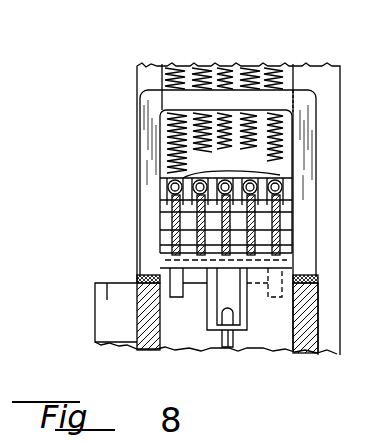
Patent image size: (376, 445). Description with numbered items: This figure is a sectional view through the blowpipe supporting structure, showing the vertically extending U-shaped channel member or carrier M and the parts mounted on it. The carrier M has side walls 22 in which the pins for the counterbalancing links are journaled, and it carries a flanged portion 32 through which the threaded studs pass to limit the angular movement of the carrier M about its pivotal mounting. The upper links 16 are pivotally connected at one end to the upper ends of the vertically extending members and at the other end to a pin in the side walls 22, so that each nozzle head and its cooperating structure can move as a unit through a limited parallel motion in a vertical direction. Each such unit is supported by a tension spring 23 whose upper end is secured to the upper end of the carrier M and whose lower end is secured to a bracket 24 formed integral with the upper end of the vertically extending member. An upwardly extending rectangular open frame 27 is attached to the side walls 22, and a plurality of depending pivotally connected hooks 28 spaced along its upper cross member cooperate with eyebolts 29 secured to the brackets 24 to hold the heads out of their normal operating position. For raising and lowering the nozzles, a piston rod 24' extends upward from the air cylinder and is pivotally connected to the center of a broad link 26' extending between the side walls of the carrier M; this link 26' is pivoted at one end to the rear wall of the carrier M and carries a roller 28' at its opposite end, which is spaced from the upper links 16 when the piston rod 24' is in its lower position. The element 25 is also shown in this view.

The tension spring 23 is at (250, 69).
The hook 28 is at (225, 134).
The rectangular open frame 27 is at (325, 110).
The eyebolt 29 is at (283, 189).
The upper link 16 is at (232, 217).
The bracket 24 is at (270, 225).
The flanged portion 32 is at (108, 292).
The broad link 26' is at (172, 295).
The roller 28' is at (212, 306).
The plunger 25 is at (238, 292).
The channel member M is at (318, 312).
The side wall 22 is at (311, 341).
The piston rod 24' is at (253, 358).